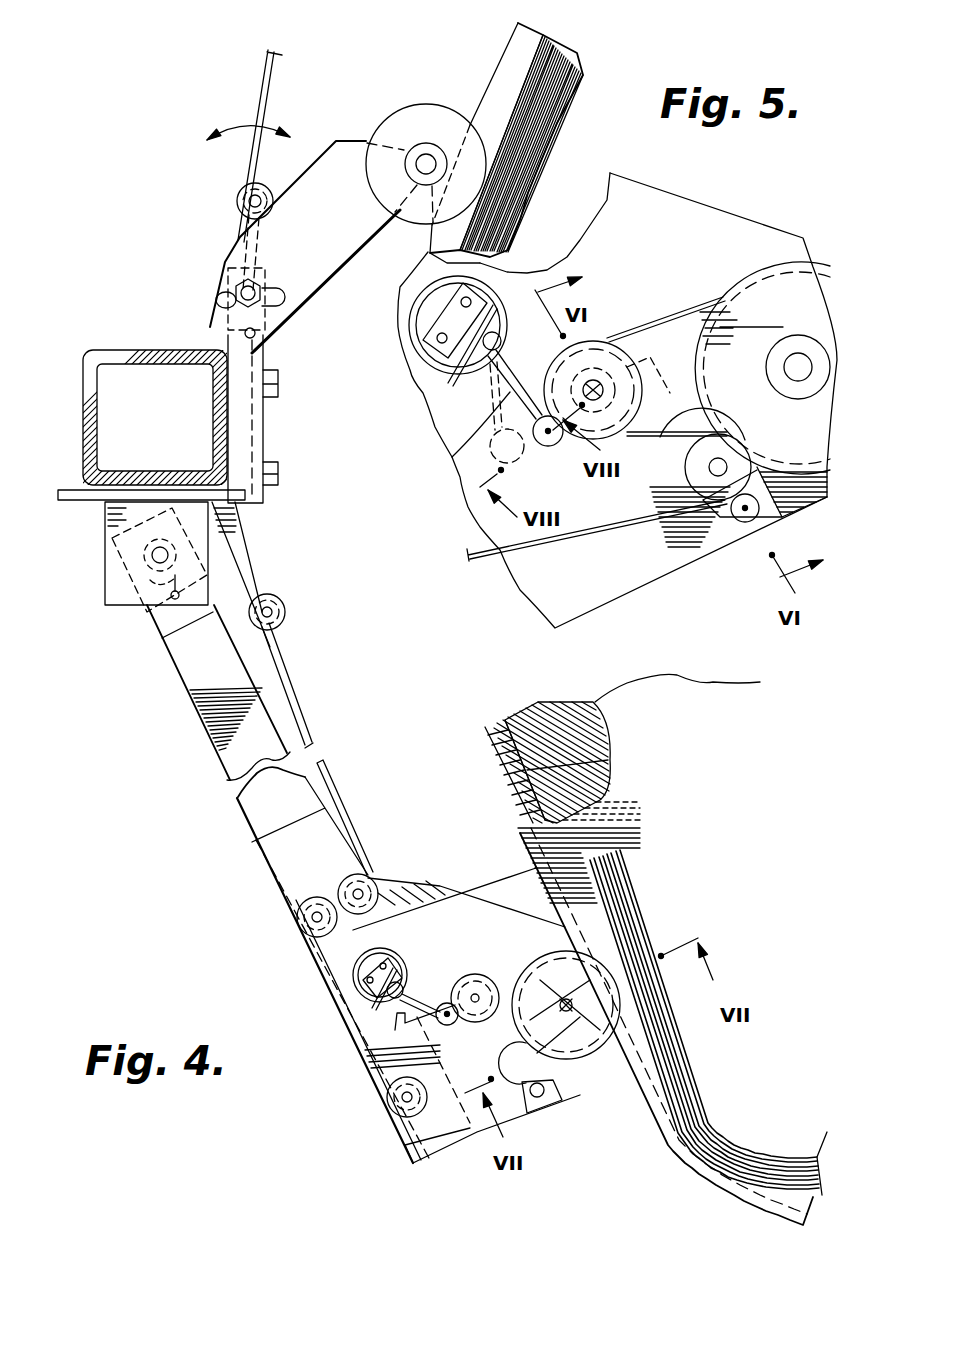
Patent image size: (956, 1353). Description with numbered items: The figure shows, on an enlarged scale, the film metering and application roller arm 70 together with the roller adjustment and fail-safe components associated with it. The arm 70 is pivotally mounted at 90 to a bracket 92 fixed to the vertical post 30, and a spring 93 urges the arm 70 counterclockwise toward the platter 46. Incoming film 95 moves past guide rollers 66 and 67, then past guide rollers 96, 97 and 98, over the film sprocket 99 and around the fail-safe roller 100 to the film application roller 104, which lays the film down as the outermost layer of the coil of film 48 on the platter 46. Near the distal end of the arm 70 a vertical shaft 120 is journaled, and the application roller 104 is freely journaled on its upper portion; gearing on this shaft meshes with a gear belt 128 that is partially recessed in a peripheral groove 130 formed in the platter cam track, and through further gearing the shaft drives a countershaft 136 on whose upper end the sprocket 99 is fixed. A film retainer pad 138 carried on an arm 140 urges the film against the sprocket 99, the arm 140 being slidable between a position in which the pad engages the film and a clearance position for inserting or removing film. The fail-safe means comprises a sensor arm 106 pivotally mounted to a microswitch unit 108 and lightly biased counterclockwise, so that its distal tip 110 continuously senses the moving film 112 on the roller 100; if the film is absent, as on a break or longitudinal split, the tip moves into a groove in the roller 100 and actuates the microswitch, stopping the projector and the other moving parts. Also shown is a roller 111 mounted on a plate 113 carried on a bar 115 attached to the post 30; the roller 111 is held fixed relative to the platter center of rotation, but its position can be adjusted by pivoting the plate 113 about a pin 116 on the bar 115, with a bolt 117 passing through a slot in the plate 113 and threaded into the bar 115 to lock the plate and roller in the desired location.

In FIG. 4, the vertical post 30 is at (142, 350).
In FIG. 5, the platter 46 is at (515, 63).
In FIG. 4, the platter 46 is at (528, 703).
In FIG. 5, the coil of film 48 is at (567, 58).
In FIG. 4, the coil of film 48 is at (725, 1157).
In FIG. 4, the guide roller 66 is at (237, 196).
In FIG. 4, the guide roller 67 is at (285, 606).
In FIG. 5, the metering and application roller arm 70 is at (660, 215).
In FIG. 4, the metering and application roller arm 70 is at (250, 846).
In FIG. 4, the pivot 90 is at (163, 553).
In FIG. 4, the bracket 92 is at (128, 513).
In FIG. 4, the spring 93 is at (142, 607).
In FIG. 4, the incoming film 95 is at (305, 718).
In FIG. 4, the guide roller 96 is at (370, 882).
In FIG. 4, the guide roller 97 is at (297, 912).
In FIG. 4, the guide roller 98 is at (408, 1125).
In FIG. 5, the film sprocket 99 is at (707, 485).
In FIG. 4, the film sprocket 99 is at (548, 1068).
In FIG. 5, the fail-safe roller 100 is at (630, 405).
In FIG. 4, the fail-safe roller 100 is at (362, 1040).
In FIG. 5, the film application roller 104 is at (820, 303).
In FIG. 4, the film application roller 104 is at (593, 1028).
In FIG. 5, the sensor arm 106 is at (452, 457).
In FIG. 4, the microswitch unit 108 is at (365, 972).
In FIG. 5, the distal tip 110 is at (538, 446).
In FIG. 5, the roller 111 is at (415, 115).
In FIG. 5, the film 112 is at (556, 540).
In FIG. 4, the plate 113 is at (313, 213).
In FIG. 4, the bar 115 is at (258, 426).
In FIG. 4, the pin 116 is at (256, 333).
In FIG. 4, the bolt 117 is at (236, 292).
In FIG. 5, the vertical shaft 120 is at (792, 360).
In FIG. 4, the gear belt 128 is at (490, 746).
In FIG. 4, the peripheral groove 130 is at (608, 760).
In FIG. 5, the countershaft 136 is at (723, 463).
In FIG. 5, the film retainer pad 138 is at (773, 512).
In FIG. 5, the arm 140 is at (747, 533).